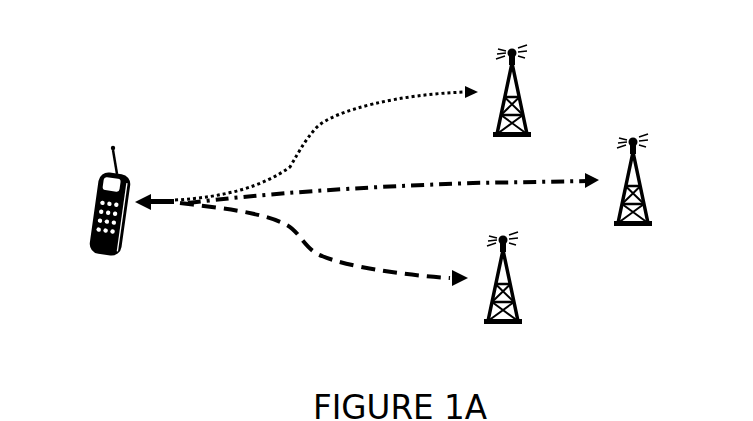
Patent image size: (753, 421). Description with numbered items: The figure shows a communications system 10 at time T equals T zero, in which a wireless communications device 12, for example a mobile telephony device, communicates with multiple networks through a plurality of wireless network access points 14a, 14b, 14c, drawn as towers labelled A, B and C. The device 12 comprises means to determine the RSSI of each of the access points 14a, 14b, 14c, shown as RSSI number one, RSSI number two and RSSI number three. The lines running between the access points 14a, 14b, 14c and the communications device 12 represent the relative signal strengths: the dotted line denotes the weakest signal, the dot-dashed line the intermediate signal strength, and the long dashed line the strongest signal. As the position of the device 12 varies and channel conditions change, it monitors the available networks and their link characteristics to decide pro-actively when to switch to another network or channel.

The communications system 10 is at (176, 74).
The wireless communications device 12 is at (94, 226).
The wireless network access point 14a is at (524, 88).
The wireless network access point 14b is at (651, 193).
The wireless network access point 14c is at (519, 295).